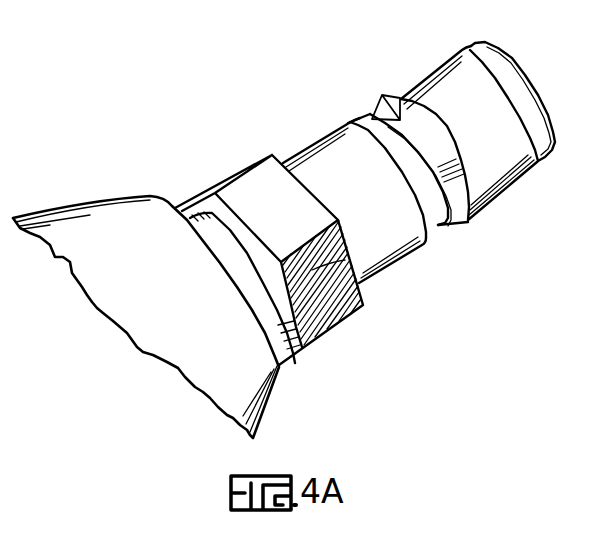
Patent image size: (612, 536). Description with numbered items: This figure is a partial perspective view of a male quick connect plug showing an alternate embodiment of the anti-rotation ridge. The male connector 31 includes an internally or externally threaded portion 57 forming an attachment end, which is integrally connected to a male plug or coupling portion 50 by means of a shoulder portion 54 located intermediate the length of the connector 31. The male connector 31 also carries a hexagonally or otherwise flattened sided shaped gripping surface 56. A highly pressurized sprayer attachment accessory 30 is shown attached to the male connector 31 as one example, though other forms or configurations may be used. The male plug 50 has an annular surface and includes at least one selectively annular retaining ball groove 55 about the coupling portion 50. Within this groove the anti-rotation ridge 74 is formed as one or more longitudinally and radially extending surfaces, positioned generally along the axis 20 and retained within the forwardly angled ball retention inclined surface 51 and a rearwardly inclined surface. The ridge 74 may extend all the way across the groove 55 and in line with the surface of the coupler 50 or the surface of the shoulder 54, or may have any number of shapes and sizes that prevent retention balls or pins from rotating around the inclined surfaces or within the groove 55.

The axis 20 is at (533, 77).
The highly pressurized sprayer attachment accessory 30 is at (125, 208).
The male connector 31 is at (362, 219).
The male plug 50 is at (485, 171).
The forwardly angled ball retention inclined surface 51 is at (459, 205).
The shoulder portion 54 is at (381, 258).
The annular retaining ball groove 55 is at (432, 208).
The gripping surface 56 is at (327, 295).
The threaded portion 57 is at (277, 318).
The ridge 74 is at (381, 98).